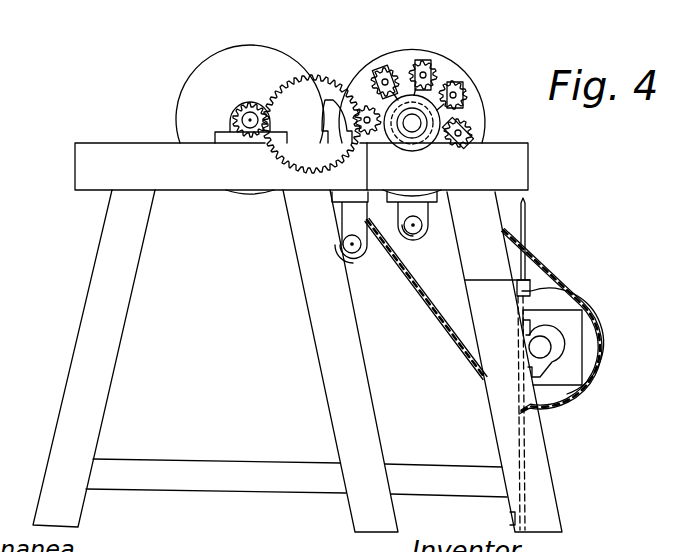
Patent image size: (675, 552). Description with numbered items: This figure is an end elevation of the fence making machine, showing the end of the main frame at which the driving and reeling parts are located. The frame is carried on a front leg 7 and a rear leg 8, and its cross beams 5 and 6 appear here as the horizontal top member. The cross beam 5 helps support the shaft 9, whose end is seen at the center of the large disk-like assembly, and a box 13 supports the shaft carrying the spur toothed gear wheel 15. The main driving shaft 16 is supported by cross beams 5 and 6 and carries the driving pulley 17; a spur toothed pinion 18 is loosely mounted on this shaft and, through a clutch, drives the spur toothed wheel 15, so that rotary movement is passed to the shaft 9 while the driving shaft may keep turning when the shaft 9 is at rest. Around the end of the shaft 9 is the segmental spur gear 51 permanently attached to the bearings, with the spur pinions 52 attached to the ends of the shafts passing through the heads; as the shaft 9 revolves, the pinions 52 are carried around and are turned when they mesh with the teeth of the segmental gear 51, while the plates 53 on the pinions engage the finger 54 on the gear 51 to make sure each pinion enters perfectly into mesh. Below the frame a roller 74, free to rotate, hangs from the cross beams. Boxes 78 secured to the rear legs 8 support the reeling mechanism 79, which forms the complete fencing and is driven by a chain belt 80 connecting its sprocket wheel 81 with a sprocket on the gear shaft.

The cross beam 5 is at (444, 166).
The cross beam 6 is at (221, 166).
The leg 7 is at (504, 362).
The leg 8 is at (94, 358).
The shaft 9 is at (412, 123).
The box 13 is at (327, 112).
The spur toothed gear wheel 15 is at (303, 77).
The main driving shaft 16 is at (232, 118).
The driving pulley 17 is at (250, 119).
The spur toothed pinion 18 is at (250, 103).
The segmental spur gear 51 is at (436, 88).
The spur pinion 52 is at (469, 96).
The plate 53 is at (464, 85).
The finger 54 is at (398, 79).
The roller 74 is at (415, 223).
The box 78 is at (554, 354).
The reeling mechanism 79 is at (553, 333).
The chain belt 80 is at (426, 299).
The sprocket wheel 81 is at (597, 347).